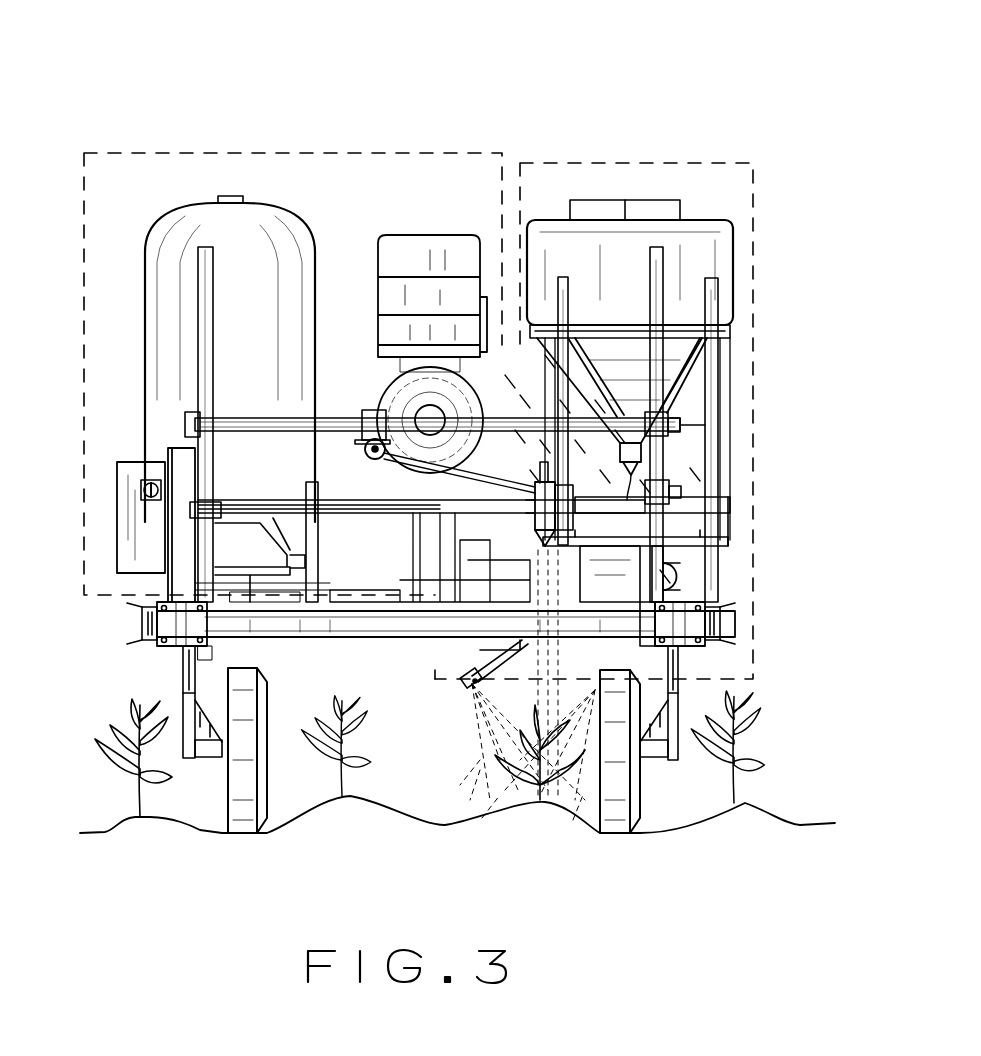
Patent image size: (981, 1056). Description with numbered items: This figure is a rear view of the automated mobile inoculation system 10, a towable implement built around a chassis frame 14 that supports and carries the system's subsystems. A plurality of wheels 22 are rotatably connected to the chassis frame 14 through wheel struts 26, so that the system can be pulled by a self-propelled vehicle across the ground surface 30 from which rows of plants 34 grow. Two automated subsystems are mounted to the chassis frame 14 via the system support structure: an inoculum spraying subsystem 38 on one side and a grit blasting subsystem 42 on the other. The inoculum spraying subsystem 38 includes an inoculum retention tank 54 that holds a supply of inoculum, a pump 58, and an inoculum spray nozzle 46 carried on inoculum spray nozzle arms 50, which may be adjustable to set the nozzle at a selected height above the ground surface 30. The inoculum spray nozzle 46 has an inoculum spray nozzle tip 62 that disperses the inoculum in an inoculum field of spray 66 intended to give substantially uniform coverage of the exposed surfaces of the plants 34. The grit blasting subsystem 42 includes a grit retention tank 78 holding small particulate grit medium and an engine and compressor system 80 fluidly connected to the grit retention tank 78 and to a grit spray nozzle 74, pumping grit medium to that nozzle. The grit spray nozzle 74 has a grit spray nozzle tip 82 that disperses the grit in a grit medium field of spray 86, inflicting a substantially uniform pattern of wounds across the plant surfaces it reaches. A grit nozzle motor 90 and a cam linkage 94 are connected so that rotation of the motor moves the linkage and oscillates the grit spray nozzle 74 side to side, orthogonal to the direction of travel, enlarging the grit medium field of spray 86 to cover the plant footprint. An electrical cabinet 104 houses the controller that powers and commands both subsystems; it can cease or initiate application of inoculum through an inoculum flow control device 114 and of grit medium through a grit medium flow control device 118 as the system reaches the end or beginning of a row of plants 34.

The automated mobile inoculation system 10 is at (170, 93).
The chassis frame 14 is at (233, 620).
The wheels 22 is at (246, 836).
The wheel struts 26 is at (680, 670).
The ground surface 30 is at (442, 820).
The plants 34 is at (112, 784).
The inoculum spraying subsystem 38 is at (652, 162).
The grit blasting subsystem 42 is at (222, 152).
The inoculum spray nozzle 46 is at (462, 680).
The inoculum spray nozzle arms 50 is at (495, 655).
The inoculum retention tank 54 is at (715, 262).
The pump 58 is at (674, 577).
The inoculum spray nozzle tip 62 is at (495, 712).
The inoculum field of spray 66 is at (503, 793).
The grit spray nozzle 74 is at (546, 500).
The grit retention tank 78 is at (266, 233).
The engine and compressor system 80 is at (401, 396).
The grit spray nozzle tip 82 is at (647, 538).
The grit medium field of spray 86 is at (660, 607).
The grit nozzle motor 90 is at (362, 449).
The cam linkage 94 is at (438, 418).
The electrical cabinet 104 is at (130, 522).
The inoculum flow control device 114 is at (590, 590).
The grit medium flow control device 118 is at (662, 492).